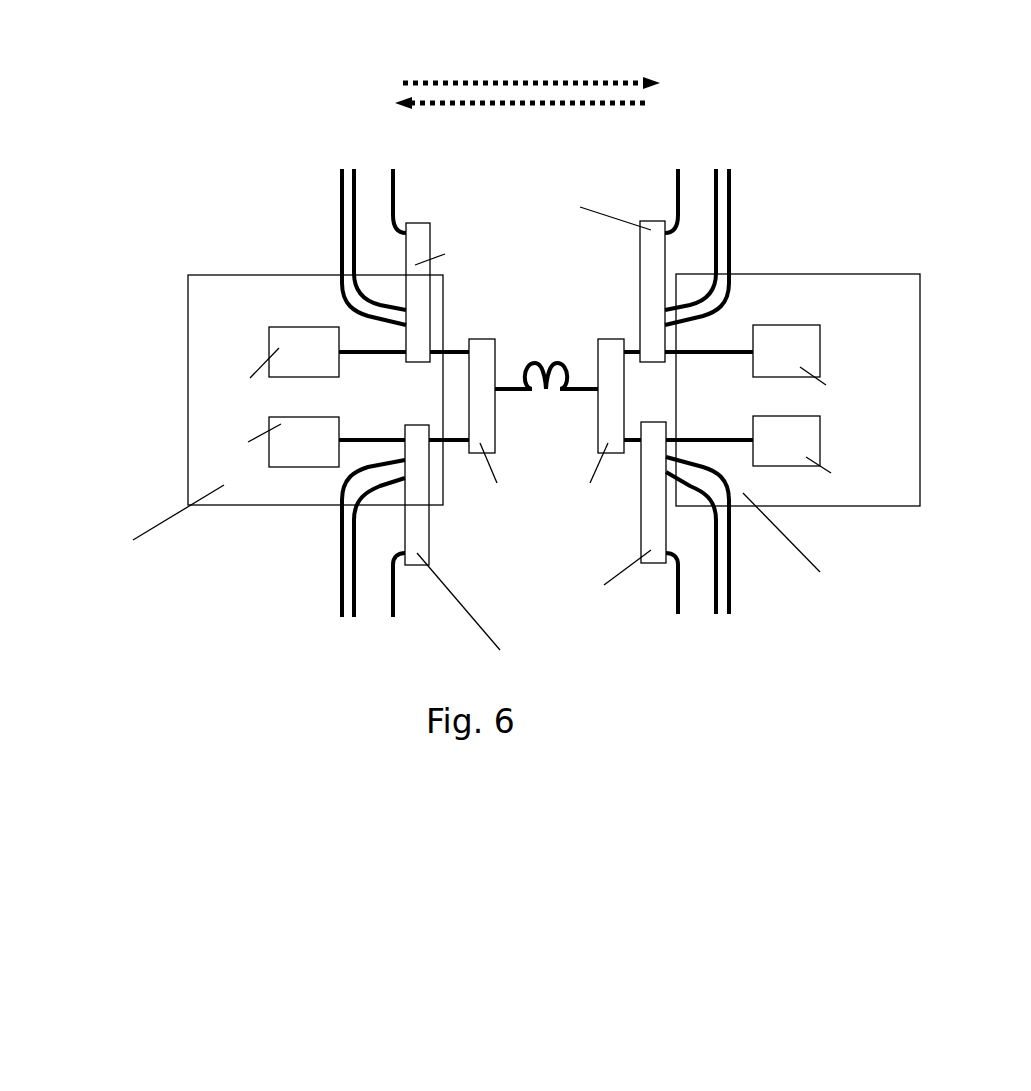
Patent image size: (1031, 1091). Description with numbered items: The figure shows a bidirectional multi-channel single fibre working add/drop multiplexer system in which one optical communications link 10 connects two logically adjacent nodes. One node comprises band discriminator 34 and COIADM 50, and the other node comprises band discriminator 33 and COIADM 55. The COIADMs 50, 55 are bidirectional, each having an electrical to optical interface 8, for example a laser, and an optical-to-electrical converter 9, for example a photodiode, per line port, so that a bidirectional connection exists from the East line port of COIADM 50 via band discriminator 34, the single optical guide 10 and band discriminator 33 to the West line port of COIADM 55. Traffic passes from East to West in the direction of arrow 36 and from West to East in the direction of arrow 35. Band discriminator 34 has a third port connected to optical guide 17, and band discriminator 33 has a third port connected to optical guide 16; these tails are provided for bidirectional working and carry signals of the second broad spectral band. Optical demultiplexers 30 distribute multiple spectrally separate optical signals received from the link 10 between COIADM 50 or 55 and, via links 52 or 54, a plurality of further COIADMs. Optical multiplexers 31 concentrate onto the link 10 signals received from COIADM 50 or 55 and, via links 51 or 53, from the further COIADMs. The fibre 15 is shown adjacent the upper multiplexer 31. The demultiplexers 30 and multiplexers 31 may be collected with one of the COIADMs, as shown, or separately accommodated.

The arrow 35 is at (528, 80).
The arrow 36 is at (523, 105).
The COIADM 50 is at (207, 312).
The COIADM 55 is at (873, 312).
The optical-to-electrical converter 9 is at (292, 364).
The electrical to optical interface 8 is at (292, 454).
The optical demultiplexer 30 is at (420, 222).
The optical multiplexer 31 is at (649, 221).
The band discriminator 34 is at (481, 338).
The band discriminator 33 is at (607, 338).
The optical communications link 10 is at (570, 360).
The optical guide 16 is at (633, 347).
The optical guide 17 is at (458, 445).
The link 52 is at (402, 166).
The link 53 is at (735, 166).
The link 51 is at (402, 622).
The link 54 is at (672, 622).
The fiber 15 is at (714, 266).